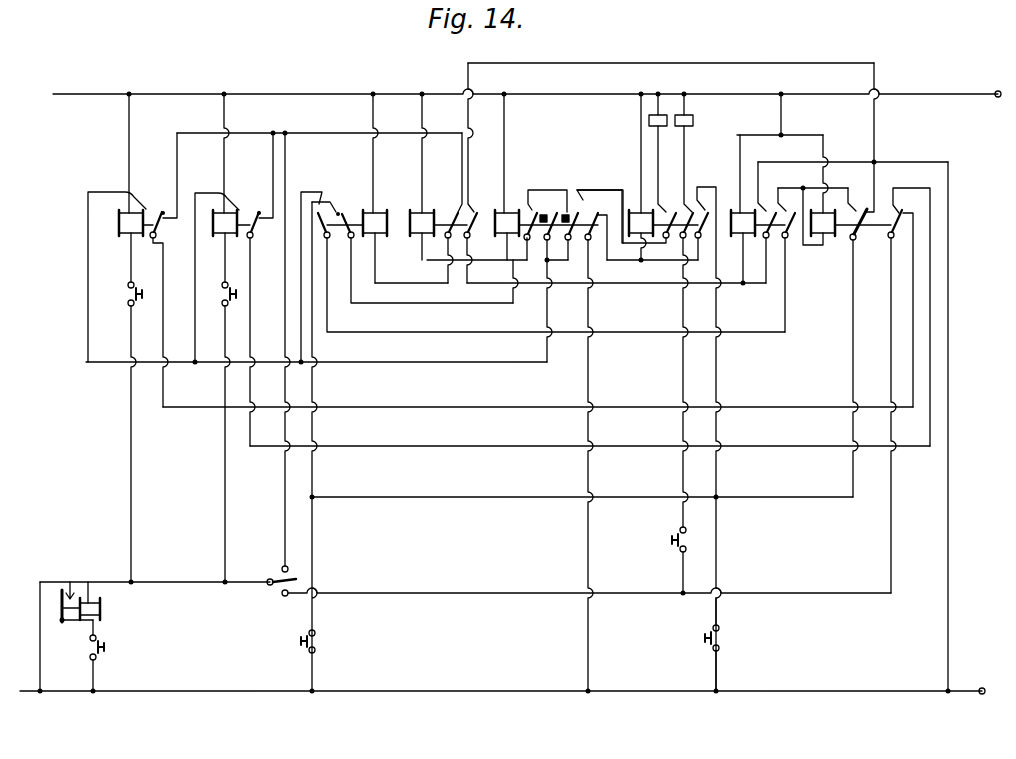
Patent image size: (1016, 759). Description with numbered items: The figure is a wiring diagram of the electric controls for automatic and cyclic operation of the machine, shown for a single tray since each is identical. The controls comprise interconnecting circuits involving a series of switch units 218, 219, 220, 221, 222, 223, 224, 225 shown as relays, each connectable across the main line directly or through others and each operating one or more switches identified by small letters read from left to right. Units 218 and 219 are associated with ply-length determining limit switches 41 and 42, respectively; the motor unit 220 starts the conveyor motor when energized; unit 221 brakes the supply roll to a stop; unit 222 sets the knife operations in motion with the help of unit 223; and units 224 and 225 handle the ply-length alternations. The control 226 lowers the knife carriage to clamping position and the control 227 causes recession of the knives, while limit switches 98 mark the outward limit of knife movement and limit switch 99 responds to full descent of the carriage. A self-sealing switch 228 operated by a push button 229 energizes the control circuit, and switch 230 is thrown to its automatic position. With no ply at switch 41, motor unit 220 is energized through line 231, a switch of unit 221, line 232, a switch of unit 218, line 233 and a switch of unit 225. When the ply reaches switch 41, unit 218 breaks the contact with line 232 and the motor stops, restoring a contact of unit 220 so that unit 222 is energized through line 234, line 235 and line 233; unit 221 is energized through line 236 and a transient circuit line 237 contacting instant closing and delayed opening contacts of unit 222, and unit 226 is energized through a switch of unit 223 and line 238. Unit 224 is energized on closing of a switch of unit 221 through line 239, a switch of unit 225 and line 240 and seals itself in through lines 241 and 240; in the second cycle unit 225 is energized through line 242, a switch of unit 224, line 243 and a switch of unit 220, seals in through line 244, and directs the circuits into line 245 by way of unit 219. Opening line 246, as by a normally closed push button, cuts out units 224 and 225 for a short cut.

The switch unit 218 is at (140, 224).
The switch unit 219 is at (236, 224).
The motor unit 220 is at (350, 222).
The switch unit 221 is at (447, 218).
The switch unit 222 is at (550, 219).
The switch unit 223 is at (668, 224).
The switch unit 224 is at (763, 224).
The switch unit 225 is at (857, 228).
The control 226 is at (664, 110).
The control 227 is at (694, 114).
The self-sealing switch 228 is at (71, 578).
The push button 229 is at (101, 644).
The switch 230 is at (296, 580).
The line 231 is at (424, 284).
The line 232 is at (344, 134).
The line 233 is at (486, 411).
The line 234 is at (473, 309).
The line 235 is at (176, 361).
The line 236 is at (504, 258).
The transient circuit line 237 is at (558, 191).
The line 238 is at (594, 191).
The line 239 is at (712, 63).
The line 240 is at (947, 618).
The line 241 is at (856, 150).
The line 242 is at (784, 186).
The line 243 is at (654, 330).
The line 244 is at (804, 499).
The line 245 is at (791, 448).
The line 246 is at (782, 114).
The limit switch 41 is at (149, 284).
The limit switch 42 is at (243, 284).
The limit switch 98 is at (708, 630).
The limit switch 99 is at (674, 546).